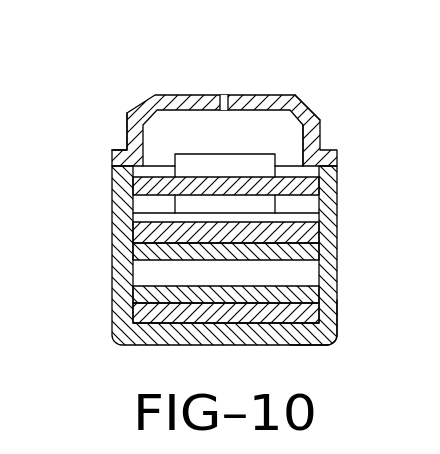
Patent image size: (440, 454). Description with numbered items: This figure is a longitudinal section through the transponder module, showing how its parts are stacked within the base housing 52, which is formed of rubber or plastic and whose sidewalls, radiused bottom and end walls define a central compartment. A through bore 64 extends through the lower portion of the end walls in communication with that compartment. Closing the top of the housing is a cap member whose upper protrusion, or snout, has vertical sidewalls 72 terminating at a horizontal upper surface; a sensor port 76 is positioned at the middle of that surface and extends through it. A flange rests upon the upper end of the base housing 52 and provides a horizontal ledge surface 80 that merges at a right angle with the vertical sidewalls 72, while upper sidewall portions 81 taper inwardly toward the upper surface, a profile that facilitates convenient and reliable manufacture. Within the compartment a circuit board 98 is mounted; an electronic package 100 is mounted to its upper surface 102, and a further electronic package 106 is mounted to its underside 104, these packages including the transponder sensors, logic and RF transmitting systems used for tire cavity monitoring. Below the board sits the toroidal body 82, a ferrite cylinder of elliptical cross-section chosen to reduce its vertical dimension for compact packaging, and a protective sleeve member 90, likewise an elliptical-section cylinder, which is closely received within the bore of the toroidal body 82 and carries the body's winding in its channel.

The base housing 52 is at (338, 316).
The through bore 64 is at (116, 278).
The vertical sidewalls 72 is at (320, 128).
The sensor port 76 is at (224, 95).
The horizontal ledge surface 80 is at (113, 147).
The upper sidewall portions 81 is at (307, 106).
The toroidal body 82 is at (167, 315).
The protective sleeve member 90 is at (298, 288).
The circuit board 98 is at (143, 188).
The electronic package 100 is at (202, 160).
The upper surface 102 is at (298, 174).
The underside 104 is at (300, 207).
The electronic package 106 is at (190, 205).